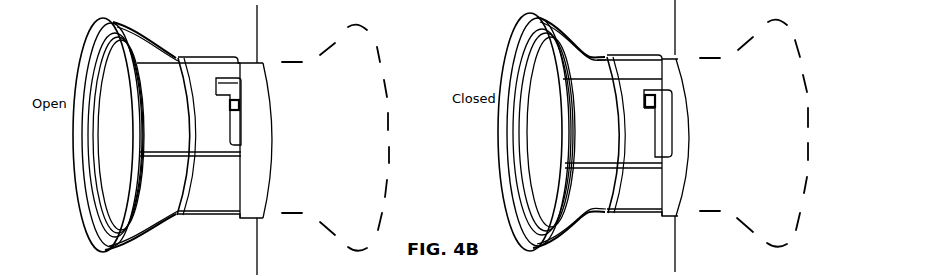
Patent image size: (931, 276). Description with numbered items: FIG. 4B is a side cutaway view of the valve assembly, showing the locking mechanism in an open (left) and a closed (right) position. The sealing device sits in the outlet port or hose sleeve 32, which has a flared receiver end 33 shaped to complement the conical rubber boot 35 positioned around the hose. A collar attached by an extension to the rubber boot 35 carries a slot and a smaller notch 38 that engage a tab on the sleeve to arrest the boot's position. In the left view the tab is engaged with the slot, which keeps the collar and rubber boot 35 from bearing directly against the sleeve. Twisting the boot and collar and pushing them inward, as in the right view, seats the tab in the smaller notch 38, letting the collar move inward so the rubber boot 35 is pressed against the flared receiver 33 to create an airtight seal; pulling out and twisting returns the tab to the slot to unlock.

The outlet port or hose sleeve 32 is at (746, 64).
The flared receiver end 33 is at (149, 40).
The rubber boot 35 is at (163, 72).
The notch 38 is at (223, 88).